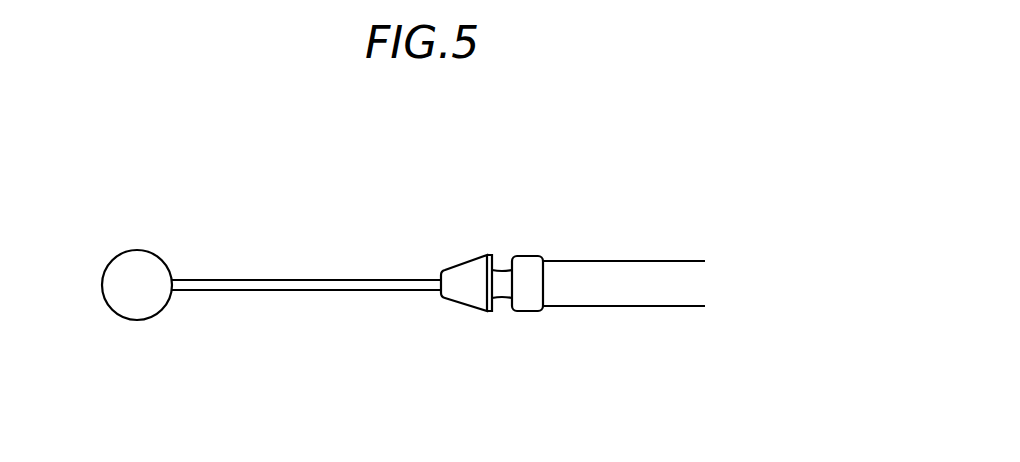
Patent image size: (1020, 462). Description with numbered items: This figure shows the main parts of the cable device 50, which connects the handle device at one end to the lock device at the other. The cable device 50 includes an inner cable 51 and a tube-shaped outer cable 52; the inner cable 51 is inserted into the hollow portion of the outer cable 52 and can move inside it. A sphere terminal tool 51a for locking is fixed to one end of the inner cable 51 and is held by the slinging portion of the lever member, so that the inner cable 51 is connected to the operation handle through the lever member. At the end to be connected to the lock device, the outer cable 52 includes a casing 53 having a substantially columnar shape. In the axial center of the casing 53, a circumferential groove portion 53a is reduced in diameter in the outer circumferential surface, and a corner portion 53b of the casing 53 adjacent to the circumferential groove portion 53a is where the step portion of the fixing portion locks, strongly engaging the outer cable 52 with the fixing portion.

The cable device 50 is at (418, 210).
The inner cable 51 is at (282, 291).
The sphere terminal tool for locking 51a is at (122, 319).
The outer cable 52 is at (653, 308).
The casing 53 is at (454, 306).
The circumferential groove portion 53a is at (504, 299).
The corner portion 53b is at (514, 256).